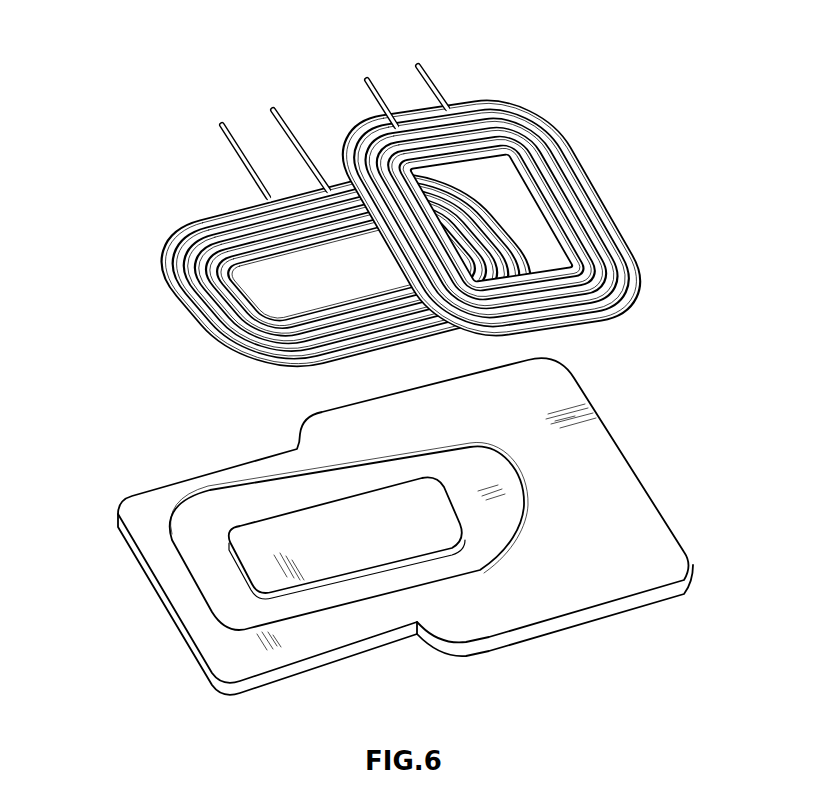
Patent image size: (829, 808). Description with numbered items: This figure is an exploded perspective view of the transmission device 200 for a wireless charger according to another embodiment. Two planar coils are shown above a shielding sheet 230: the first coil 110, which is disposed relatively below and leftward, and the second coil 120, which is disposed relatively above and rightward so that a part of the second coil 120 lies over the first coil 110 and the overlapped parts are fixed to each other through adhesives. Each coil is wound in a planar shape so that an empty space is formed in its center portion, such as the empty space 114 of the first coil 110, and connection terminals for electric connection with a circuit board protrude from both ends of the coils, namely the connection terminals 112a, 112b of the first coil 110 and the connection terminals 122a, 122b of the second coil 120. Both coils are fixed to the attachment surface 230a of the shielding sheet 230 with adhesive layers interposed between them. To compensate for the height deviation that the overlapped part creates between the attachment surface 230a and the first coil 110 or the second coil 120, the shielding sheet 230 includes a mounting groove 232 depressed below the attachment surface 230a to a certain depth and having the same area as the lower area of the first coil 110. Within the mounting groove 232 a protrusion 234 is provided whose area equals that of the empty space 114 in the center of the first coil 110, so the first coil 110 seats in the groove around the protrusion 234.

The first coil 110 is at (196, 301).
The connection terminal 112a is at (224, 127).
The connection terminal 112b is at (277, 110).
The empty space 114 is at (270, 266).
The second coil 120 is at (598, 196).
The connection terminal 122a is at (367, 78).
The connection terminal 122b is at (419, 64).
The transmission device for a wireless charger 200 is at (394, 196).
The shielding sheet 230 is at (611, 442).
The attachment surface 230a is at (230, 641).
The mounting groove 232 is at (376, 598).
The protrusion 234 is at (281, 527).